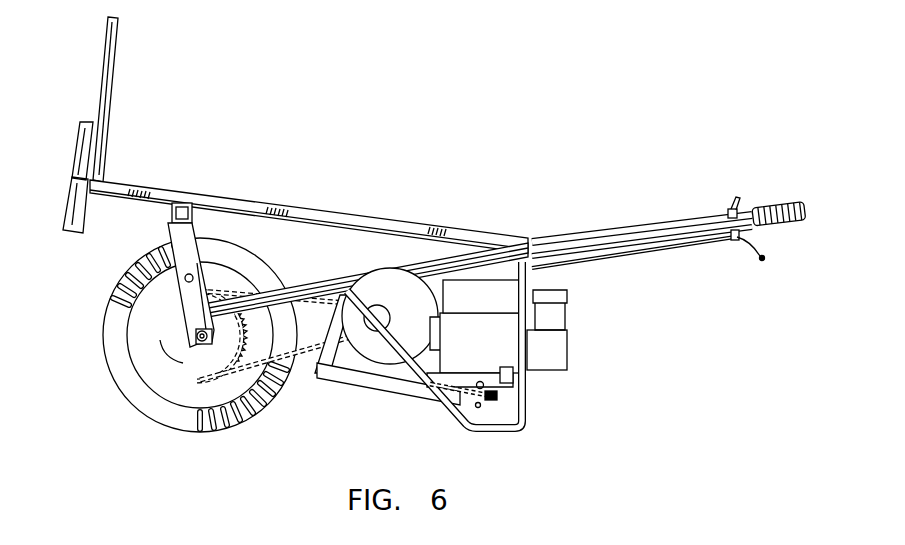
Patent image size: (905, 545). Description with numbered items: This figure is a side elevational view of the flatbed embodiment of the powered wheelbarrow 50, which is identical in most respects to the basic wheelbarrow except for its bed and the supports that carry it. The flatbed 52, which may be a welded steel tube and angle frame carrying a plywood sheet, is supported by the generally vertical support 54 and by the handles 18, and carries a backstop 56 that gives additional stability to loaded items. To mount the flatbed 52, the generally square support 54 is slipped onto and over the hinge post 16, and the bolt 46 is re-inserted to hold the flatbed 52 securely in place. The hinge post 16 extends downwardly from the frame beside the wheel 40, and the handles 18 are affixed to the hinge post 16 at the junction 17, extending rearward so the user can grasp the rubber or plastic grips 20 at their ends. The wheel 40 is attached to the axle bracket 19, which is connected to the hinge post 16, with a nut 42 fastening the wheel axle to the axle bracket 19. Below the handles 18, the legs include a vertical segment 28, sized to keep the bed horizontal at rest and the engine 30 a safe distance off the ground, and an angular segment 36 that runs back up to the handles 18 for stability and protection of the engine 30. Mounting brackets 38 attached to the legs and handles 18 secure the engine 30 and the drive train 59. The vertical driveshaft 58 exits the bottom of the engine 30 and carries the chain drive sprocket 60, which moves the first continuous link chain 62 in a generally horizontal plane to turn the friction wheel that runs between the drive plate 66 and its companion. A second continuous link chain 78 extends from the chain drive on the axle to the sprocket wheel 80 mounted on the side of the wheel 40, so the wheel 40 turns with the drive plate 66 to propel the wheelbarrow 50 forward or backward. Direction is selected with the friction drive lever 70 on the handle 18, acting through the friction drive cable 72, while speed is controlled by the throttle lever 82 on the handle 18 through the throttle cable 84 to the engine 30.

The wheelbarrow 50 is at (440, 157).
The backstop 56 is at (113, 88).
The flatbed 52 is at (253, 198).
The wheel 40 is at (128, 397).
The second continuous link chain 78 is at (233, 380).
The nut 42 is at (203, 377).
The junction 17 is at (193, 327).
The sprocket wheel 80 is at (187, 360).
The hinge post 16 is at (193, 287).
The vertical support 54 is at (183, 235).
The bolt 46 is at (183, 283).
The axle bracket 19 is at (195, 335).
The drive plate 66 is at (417, 251).
The drive train 59 is at (303, 372).
The mounting bracket 38 is at (382, 380).
The engine 30 is at (548, 353).
The angular segment 36 is at (445, 410).
The vertical segment 28 is at (527, 417).
The chain drive sprocket 60 is at (493, 400).
The vertical driveshaft 58 is at (482, 383).
The first continuous link chain 62 is at (478, 408).
The friction drive cable 72 is at (695, 215).
The throttle cable 84 is at (650, 222).
The handle 18 is at (645, 237).
The throttle lever 82 is at (730, 197).
The grip 20 is at (775, 210).
The friction drive lever 70 is at (750, 262).